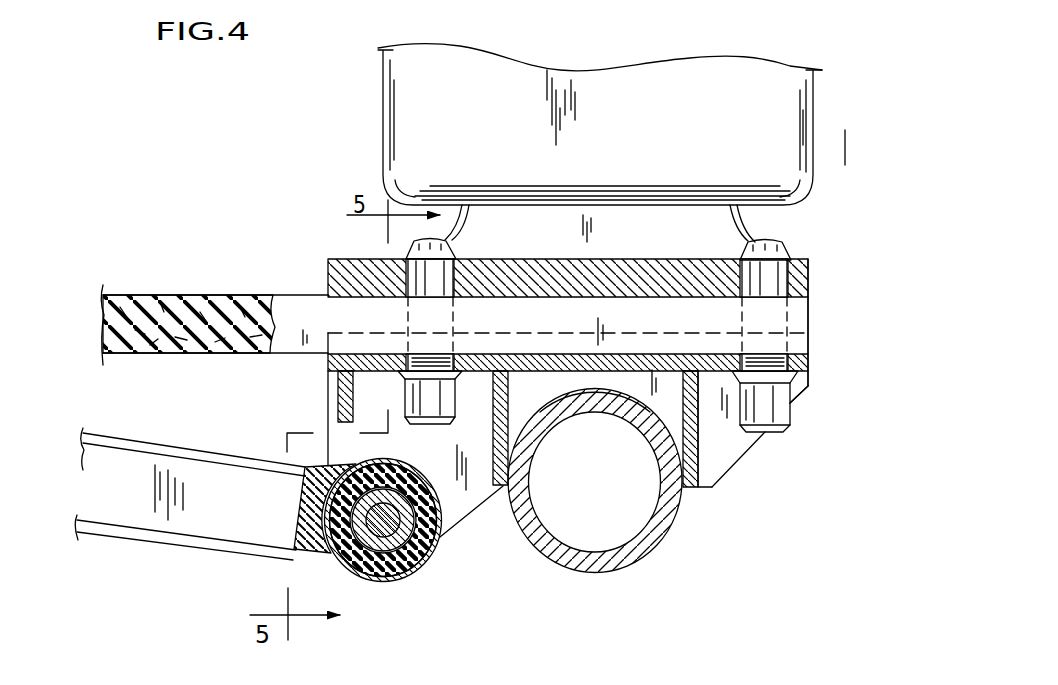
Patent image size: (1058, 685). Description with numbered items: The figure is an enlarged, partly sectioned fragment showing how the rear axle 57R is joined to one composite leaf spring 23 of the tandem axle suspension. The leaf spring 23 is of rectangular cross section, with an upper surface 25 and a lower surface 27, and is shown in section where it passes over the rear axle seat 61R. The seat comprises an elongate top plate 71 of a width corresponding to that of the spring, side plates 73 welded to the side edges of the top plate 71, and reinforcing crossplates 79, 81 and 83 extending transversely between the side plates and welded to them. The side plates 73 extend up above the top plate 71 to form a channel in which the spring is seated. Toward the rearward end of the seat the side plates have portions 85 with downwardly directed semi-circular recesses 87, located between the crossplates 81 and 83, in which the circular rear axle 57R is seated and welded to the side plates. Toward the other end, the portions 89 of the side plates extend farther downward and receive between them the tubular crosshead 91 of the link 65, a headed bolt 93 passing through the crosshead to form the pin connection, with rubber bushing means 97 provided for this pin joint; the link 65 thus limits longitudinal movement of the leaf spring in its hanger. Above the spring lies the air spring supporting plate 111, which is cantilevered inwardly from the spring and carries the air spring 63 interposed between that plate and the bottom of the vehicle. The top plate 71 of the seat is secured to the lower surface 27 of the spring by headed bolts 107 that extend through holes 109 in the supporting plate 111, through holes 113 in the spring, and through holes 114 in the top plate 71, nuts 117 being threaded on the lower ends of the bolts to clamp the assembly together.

The composite leaf spring 23 is at (191, 297).
The upper surface 25 is at (255, 288).
The lower surface 27 is at (222, 352).
The rear axle 57R is at (605, 568).
The rear axle seat 61R is at (808, 388).
The air spring 63 is at (783, 152).
The link 65 is at (150, 538).
The top plate 71 is at (327, 363).
The side plate 73 is at (485, 333).
The reinforcing crossplate 79 is at (339, 401).
The reinforcing crossplate 81 is at (493, 402).
The reinforcing crossplate 83 is at (690, 488).
The side plate portion 85 is at (713, 466).
The semi-circular recess 87 is at (637, 395).
The side plate portion 89 is at (483, 507).
The tubular crosshead 91 is at (380, 582).
The headed bolt 93 is at (398, 577).
The rubber bushing means 97 is at (398, 540).
The headed bolt 107 is at (462, 250).
The hole 109 is at (400, 268).
The air spring supporting plate 111 is at (642, 260).
The hole 113 is at (407, 312).
The hole 114 is at (400, 348).
The nut 117 is at (440, 427).